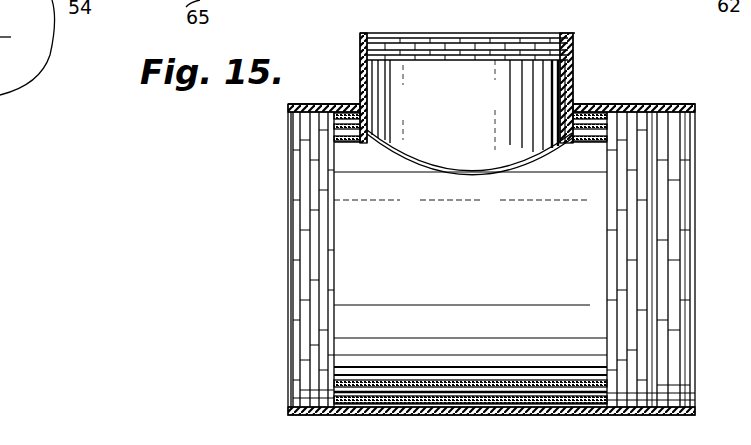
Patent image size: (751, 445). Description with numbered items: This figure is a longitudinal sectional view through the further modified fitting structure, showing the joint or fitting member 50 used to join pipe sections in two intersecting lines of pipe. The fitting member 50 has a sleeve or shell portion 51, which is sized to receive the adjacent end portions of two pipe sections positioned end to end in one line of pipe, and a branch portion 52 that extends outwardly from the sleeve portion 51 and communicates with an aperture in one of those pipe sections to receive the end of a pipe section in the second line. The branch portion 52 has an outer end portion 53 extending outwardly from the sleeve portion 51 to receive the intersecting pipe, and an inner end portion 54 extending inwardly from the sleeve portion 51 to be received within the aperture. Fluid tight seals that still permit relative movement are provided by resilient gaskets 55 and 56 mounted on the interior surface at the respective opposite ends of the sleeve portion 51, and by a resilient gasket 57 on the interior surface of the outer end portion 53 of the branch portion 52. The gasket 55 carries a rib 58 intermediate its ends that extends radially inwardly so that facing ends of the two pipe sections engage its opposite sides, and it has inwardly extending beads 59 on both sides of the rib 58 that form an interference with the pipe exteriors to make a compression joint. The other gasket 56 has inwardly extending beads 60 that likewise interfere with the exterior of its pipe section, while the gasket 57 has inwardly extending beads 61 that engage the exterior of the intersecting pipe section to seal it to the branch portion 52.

The joint or fitting member 50 is at (610, 91).
The sleeve or shell portion 51 is at (322, 103).
The branch portion 52 is at (575, 57).
The outer end portion 53 is at (360, 45).
The inner end portion 54 is at (434, 152).
The resilient gasket 55 is at (678, 175).
The resilient gasket 56 is at (310, 225).
The resilient gasket 57 is at (478, 52).
The rib 58 is at (650, 238).
The inwardly extending portions or beads 59 is at (686, 142).
The inwardly extending portions or beads 60 is at (322, 260).
The inwardly extending portions or beads 61 is at (443, 50).